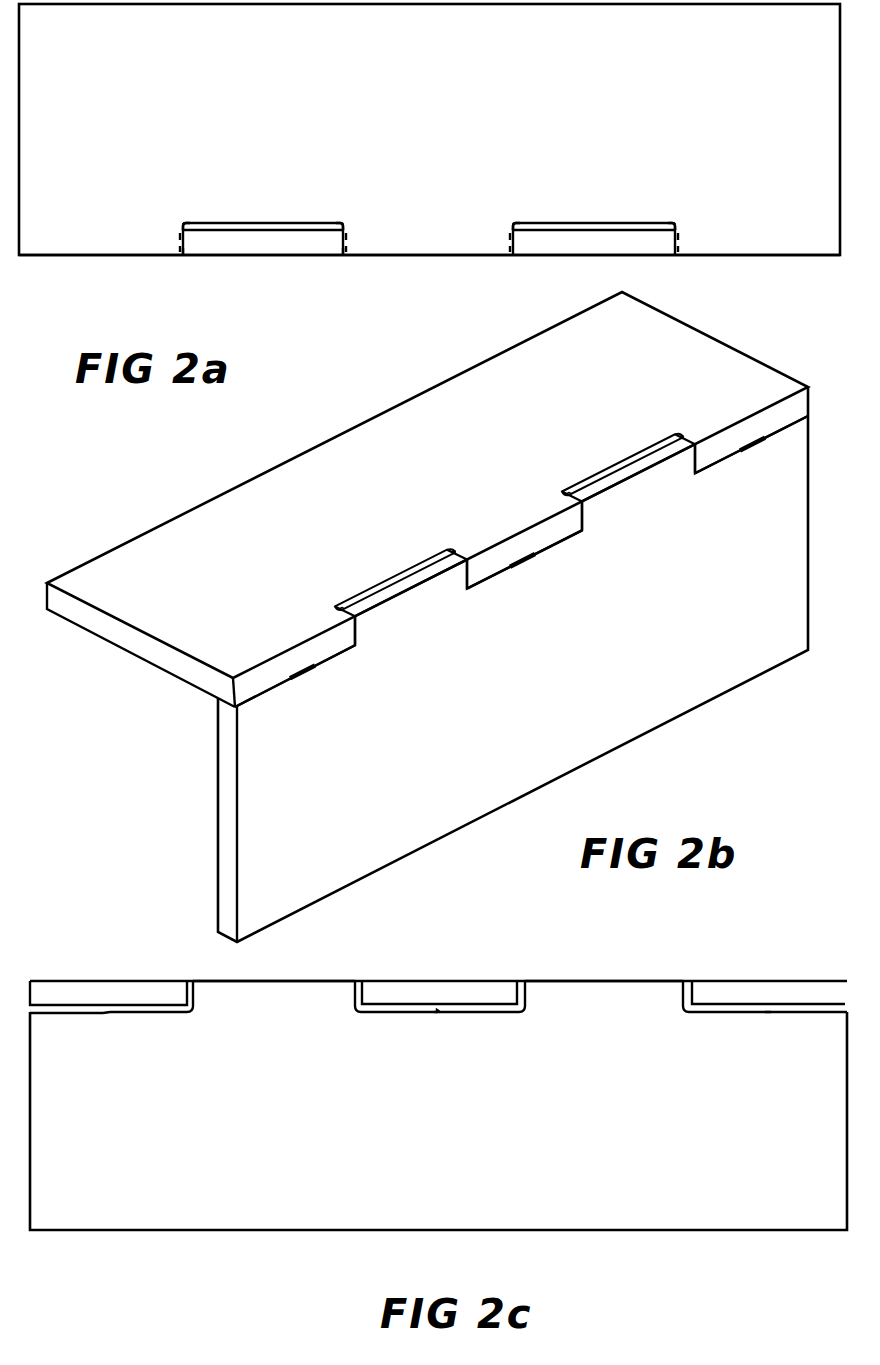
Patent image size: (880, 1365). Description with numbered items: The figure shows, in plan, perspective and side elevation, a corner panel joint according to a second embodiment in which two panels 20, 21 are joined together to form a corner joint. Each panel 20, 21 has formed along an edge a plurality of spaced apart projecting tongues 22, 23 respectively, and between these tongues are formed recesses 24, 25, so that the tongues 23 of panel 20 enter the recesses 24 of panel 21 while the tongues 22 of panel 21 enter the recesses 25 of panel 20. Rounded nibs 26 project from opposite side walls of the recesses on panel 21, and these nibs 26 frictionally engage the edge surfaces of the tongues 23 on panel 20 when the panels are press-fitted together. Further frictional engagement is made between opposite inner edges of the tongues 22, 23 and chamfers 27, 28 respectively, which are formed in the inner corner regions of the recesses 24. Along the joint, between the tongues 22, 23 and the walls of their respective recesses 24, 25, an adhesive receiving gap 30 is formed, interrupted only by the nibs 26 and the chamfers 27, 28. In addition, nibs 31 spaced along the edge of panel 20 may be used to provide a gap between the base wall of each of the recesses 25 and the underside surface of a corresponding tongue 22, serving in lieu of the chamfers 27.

In FIG. 2A, the panel 20 is at (238, 259).
In FIG. 2B, the panel 20 is at (563, 685).
In FIG. 2C, the panel 20 is at (656, 1168).
In FIG. 2A, the panel 21 is at (638, 113).
In FIG. 2B, the panel 21 is at (598, 365).
In FIG. 2C, the panel 21 is at (781, 977).
In FIG. 2B, the projecting tongue 22 is at (738, 408).
In FIG. 2C, the projecting tongue 22 is at (130, 978).
In FIG. 2B, the projecting tongue 23 is at (396, 623).
In FIG. 2C, the projecting tongue 23 is at (305, 998).
In FIG. 2B, the recess 24 is at (379, 583).
In FIG. 2B, the recess 25 is at (271, 705).
In FIG. 2A, the rounded nib 26 is at (180, 253).
In FIG. 2B, the rounded nib 26 is at (346, 606).
In FIG. 2B, the chamfer 27 is at (358, 649).
In FIG. 2A, the chamfer 28 is at (183, 223).
In FIG. 2B, the chamfer 28 is at (338, 609).
In FIG. 2A, the adhesive receiving gap 30 is at (272, 222).
In FIG. 2C, the adhesive receiving gap 30 is at (170, 1014).
In FIG. 2B, the nib 31 is at (298, 683).
In FIG. 2C, the nib 31 is at (107, 1014).